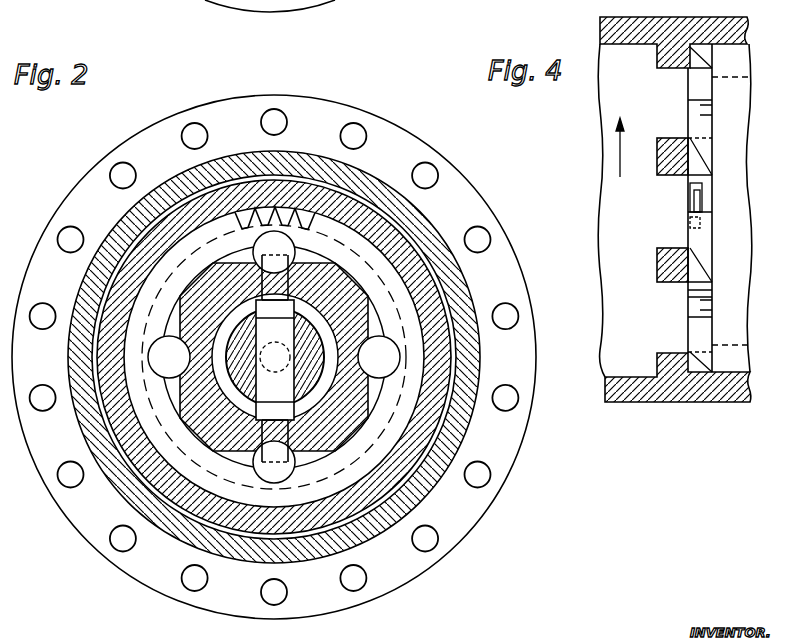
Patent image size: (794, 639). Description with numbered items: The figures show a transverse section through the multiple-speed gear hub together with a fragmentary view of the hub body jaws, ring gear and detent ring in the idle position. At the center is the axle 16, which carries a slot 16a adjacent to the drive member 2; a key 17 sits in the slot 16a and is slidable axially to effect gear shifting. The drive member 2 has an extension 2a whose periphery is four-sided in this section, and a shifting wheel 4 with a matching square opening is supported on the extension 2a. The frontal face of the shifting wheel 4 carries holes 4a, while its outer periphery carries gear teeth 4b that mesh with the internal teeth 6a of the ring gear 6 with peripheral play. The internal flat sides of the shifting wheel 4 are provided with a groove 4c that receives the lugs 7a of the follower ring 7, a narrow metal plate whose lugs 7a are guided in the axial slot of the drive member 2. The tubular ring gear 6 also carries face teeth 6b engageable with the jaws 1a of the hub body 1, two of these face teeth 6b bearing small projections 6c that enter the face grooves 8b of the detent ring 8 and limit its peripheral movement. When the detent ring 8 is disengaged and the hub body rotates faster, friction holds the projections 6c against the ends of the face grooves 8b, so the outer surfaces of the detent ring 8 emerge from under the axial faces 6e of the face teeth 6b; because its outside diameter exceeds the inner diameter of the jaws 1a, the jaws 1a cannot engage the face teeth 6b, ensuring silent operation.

In FIG. 4, the wheel hub 1 is at (613, 29).
In FIG. 4, the jaws 1a is at (667, 268).
In FIG. 2, the drive member 2 is at (337, 420).
In FIG. 2, the extension 2a is at (215, 452).
In FIG. 2, the shifting wheel 4 is at (365, 268).
In FIG. 2, the holes 4a is at (378, 373).
In FIG. 2, the gear teeth 4b is at (298, 215).
In FIG. 2, the groove 4c is at (257, 462).
In FIG. 2, the ring gear 6 is at (357, 210).
In FIG. 4, the ring gear 6 is at (737, 357).
In FIG. 2, the teeth 6a is at (244, 212).
In FIG. 4, the face teeth 6b is at (702, 122).
In FIG. 4, the projections 6c is at (690, 223).
In FIG. 4, the axial faces 6e is at (705, 313).
In FIG. 2, the follower ring 7 is at (315, 402).
In FIG. 2, the lugs 7a is at (282, 280).
In FIG. 4, the detent ring 8 is at (697, 297).
In FIG. 4, the face grooves 8b is at (694, 203).
In FIG. 2, the axle 16 is at (232, 372).
In FIG. 2, the slot 16a is at (265, 333).
In FIG. 2, the key 17 is at (250, 320).